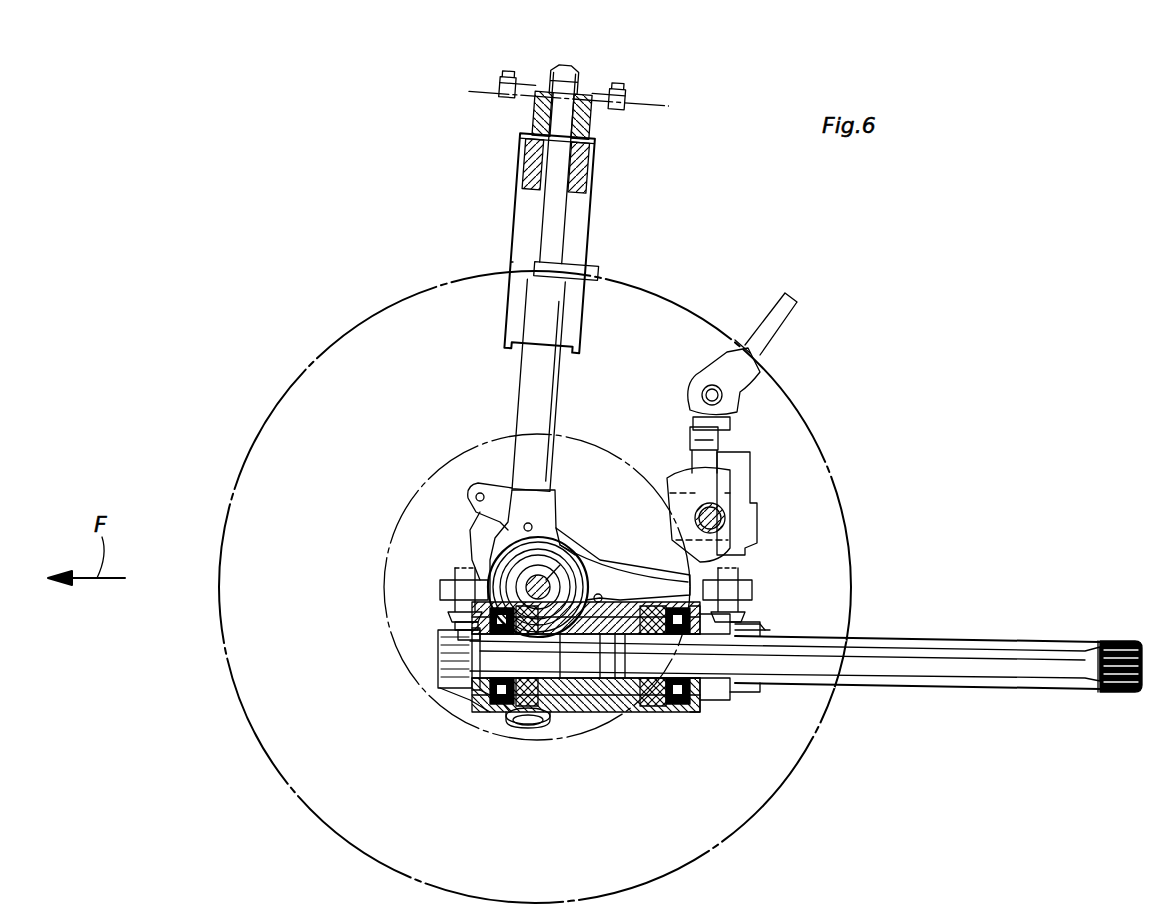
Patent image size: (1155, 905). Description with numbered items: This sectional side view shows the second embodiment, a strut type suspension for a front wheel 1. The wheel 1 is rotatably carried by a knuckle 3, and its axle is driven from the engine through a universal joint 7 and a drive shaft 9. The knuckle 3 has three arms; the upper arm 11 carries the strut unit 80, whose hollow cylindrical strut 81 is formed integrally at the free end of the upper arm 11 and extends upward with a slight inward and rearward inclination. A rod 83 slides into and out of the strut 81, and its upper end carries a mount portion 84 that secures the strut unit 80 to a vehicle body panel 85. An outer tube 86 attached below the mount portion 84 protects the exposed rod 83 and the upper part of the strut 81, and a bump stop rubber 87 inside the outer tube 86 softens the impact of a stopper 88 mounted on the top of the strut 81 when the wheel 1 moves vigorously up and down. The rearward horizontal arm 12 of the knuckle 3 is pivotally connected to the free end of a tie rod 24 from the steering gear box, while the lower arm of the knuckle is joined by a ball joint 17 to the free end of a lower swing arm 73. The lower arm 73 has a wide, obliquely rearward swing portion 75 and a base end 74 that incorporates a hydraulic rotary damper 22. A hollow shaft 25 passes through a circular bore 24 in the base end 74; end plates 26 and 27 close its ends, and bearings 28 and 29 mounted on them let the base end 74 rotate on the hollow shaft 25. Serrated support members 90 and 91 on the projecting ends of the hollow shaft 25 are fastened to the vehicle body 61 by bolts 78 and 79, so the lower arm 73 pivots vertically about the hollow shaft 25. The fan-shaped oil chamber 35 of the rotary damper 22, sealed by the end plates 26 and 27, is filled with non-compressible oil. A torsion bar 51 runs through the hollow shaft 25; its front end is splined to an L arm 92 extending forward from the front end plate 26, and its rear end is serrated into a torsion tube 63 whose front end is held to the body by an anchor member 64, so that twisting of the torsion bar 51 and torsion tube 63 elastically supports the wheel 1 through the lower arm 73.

The front wheel 1 is at (290, 372).
The knuckle 3 is at (555, 535).
The universal joint 7 is at (500, 560).
The drive shaft 9 is at (565, 560).
The upper arm 11 is at (572, 500).
The horizontal arm 12 is at (628, 568).
The ball joint 17 is at (522, 730).
The hydraulic rotary damper 22 is at (610, 715).
The tie rod 24 is at (750, 500).
The hollow shaft 25 is at (630, 715).
The end plate 26 is at (505, 712).
The end plate 27 is at (660, 712).
The bearing 28 is at (490, 705).
The bearing 29 is at (712, 702).
The oil chamber 35 is at (640, 622).
The torsion bar 51 is at (890, 688).
The vehicle body 61 is at (445, 590).
The torsion tube 63 is at (948, 640).
The anchor member 64 is at (758, 694).
The lower swing arm 73 is at (520, 710).
The base end 74 is at (640, 712).
The swing portion 75 is at (540, 715).
The bolt 78 is at (760, 628).
The bolt 79 is at (456, 616).
The strut unit 80 is at (509, 260).
The strut 81 is at (560, 399).
The rod 83 is at (566, 232).
The mount portion 84 is at (537, 90).
The vehicle body panel 85 is at (645, 104).
The outer tube 86 is at (592, 193).
The bump stop rubber 87 is at (594, 162).
The stopper 88 is at (590, 268).
The support member 90 is at (458, 634).
The support member 91 is at (756, 626).
The L arm 92 is at (450, 688).